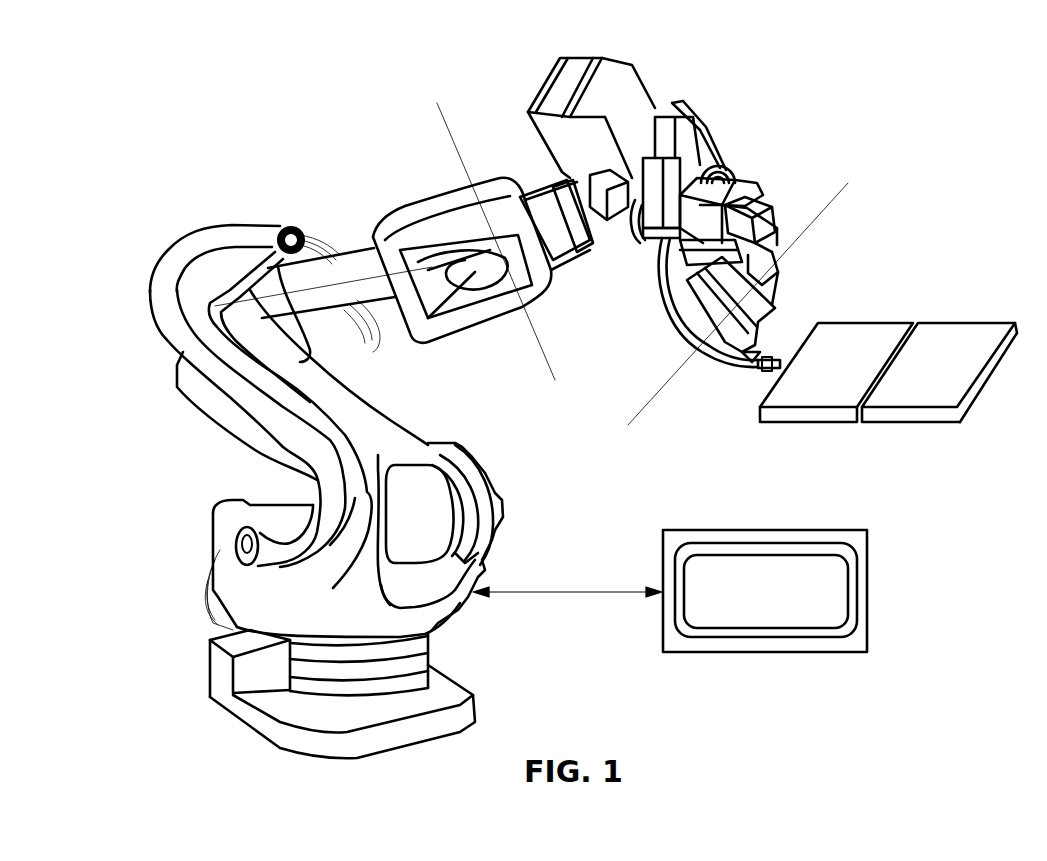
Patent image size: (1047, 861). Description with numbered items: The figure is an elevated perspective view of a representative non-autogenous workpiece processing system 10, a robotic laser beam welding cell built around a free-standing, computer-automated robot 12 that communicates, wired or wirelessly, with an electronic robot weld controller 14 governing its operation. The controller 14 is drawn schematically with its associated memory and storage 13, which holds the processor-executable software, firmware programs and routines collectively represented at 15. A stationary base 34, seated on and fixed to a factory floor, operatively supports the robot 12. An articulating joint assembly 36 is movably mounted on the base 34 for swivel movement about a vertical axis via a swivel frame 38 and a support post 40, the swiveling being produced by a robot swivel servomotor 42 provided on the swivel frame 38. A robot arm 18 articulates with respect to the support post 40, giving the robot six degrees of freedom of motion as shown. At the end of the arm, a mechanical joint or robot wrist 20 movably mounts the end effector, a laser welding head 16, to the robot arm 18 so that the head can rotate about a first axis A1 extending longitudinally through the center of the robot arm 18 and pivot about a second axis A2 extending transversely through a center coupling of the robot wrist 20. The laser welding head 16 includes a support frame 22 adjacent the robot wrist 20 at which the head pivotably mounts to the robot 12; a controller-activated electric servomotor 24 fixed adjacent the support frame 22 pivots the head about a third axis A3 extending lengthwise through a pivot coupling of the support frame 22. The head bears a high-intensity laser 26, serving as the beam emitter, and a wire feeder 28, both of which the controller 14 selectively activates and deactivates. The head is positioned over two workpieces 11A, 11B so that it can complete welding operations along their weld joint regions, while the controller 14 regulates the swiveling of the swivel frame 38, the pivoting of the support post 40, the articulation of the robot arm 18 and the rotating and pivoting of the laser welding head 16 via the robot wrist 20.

The non-autogenous workpiece processing system 10 is at (913, 283).
The workpiece 11A is at (800, 420).
The workpiece 11B is at (925, 420).
The robot 12 is at (217, 205).
The memory and storage 13 is at (857, 560).
The robot weld controller 14 is at (866, 537).
The processor-executable software 15 is at (847, 594).
The laser welding head 16 is at (690, 370).
The robot arm 18 is at (363, 260).
The robot wrist 20 is at (420, 210).
The support frame 22 is at (780, 273).
The electric servomotor 24 is at (743, 173).
The high-intensity laser 26 is at (790, 312).
The wire feeder 28 is at (757, 377).
The stationary base 34 is at (205, 640).
The articulating joint assembly 36 is at (183, 298).
The swivel frame 38 is at (440, 620).
The support post 40 is at (227, 424).
The robot swivel servomotor 42 is at (243, 513).
The first axis A1 is at (360, 325).
The second axis A2 is at (545, 350).
The third axis A3 is at (832, 193).